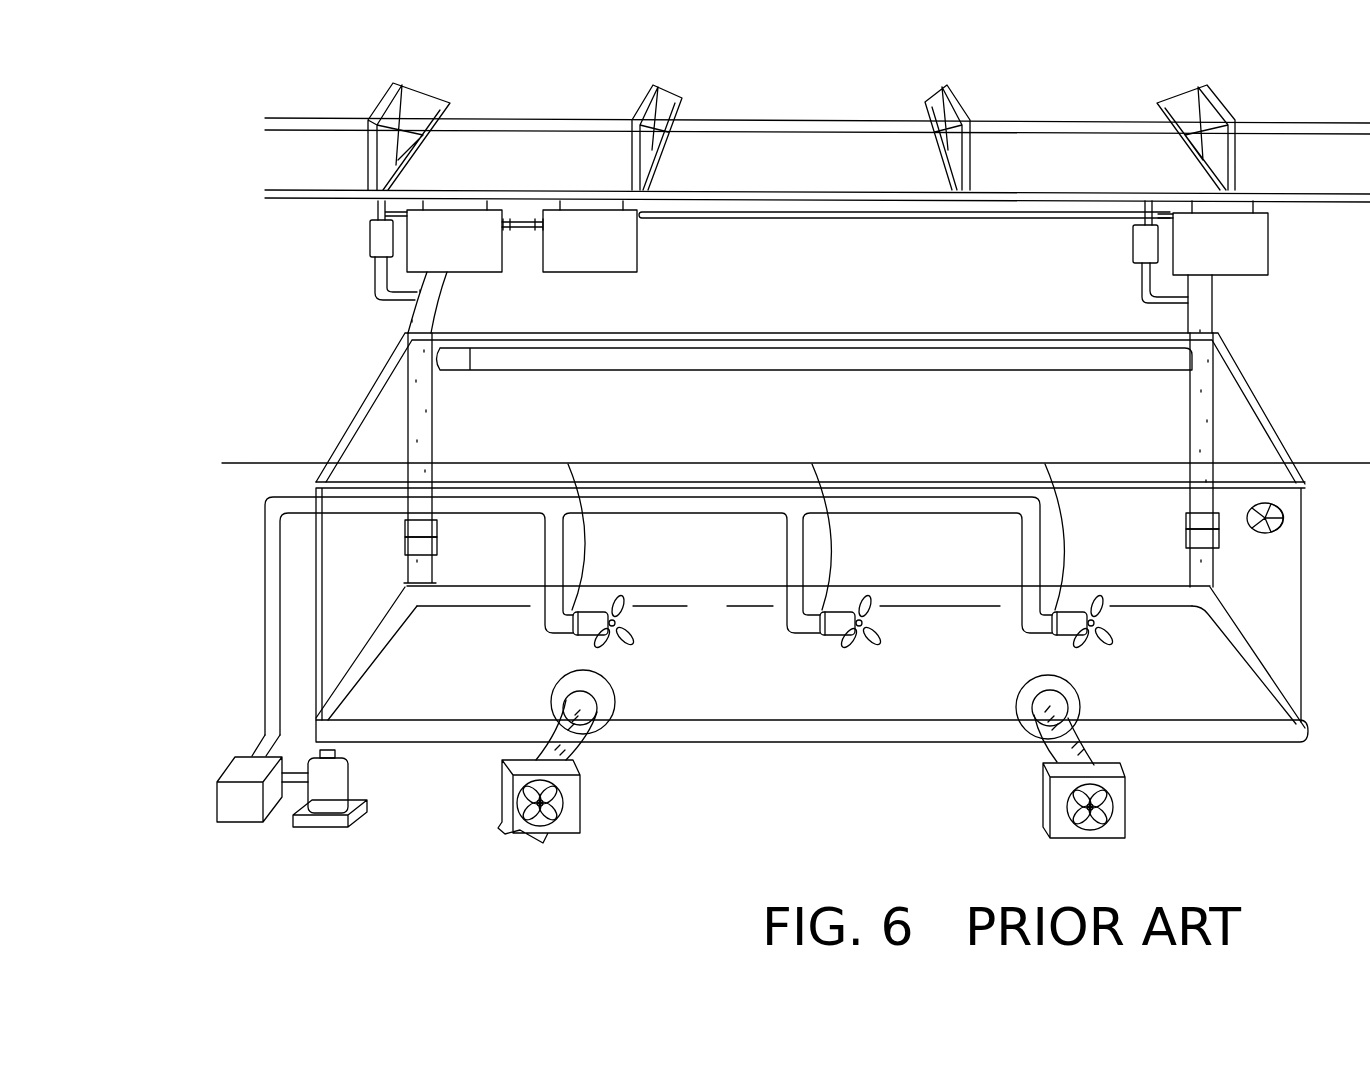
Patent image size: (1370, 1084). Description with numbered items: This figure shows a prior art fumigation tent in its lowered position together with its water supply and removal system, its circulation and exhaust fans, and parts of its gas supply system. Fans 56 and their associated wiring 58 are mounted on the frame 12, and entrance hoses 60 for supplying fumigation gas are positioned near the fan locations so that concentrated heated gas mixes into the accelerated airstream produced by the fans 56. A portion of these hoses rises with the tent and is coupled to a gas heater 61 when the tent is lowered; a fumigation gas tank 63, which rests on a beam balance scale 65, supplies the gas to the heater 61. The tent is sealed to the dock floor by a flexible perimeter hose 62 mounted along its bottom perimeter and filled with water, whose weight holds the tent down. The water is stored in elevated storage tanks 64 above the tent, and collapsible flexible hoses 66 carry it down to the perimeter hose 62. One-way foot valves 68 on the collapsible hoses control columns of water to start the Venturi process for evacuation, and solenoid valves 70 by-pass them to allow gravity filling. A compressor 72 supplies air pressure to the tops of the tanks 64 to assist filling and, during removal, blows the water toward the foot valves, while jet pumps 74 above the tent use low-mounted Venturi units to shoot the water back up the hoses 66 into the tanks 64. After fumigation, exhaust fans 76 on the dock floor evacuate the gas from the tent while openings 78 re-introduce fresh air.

The frame 12 is at (1258, 410).
The fans 56 is at (587, 640).
The wiring 58 is at (283, 462).
The entrance hoses 60 is at (263, 558).
The gas heater 61 is at (243, 770).
The flexible perimeter hose 62 is at (713, 597).
The fumigation gas tank 63 is at (337, 767).
The elevated storage tanks 64 is at (470, 272).
The beam balance scale 65 is at (367, 800).
The collapsible flexible hoses 66 is at (420, 437).
The one-way foot valves 68 is at (430, 530).
The solenoid valves 70 is at (430, 550).
The compressor 72 is at (637, 260).
The jet pumps 74 is at (368, 238).
The exhaust fans 76 is at (507, 802).
The openings 78 is at (1287, 513).